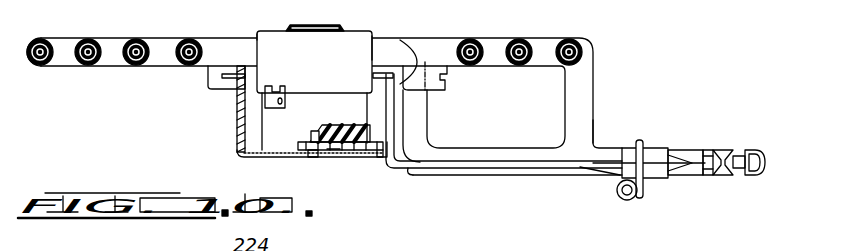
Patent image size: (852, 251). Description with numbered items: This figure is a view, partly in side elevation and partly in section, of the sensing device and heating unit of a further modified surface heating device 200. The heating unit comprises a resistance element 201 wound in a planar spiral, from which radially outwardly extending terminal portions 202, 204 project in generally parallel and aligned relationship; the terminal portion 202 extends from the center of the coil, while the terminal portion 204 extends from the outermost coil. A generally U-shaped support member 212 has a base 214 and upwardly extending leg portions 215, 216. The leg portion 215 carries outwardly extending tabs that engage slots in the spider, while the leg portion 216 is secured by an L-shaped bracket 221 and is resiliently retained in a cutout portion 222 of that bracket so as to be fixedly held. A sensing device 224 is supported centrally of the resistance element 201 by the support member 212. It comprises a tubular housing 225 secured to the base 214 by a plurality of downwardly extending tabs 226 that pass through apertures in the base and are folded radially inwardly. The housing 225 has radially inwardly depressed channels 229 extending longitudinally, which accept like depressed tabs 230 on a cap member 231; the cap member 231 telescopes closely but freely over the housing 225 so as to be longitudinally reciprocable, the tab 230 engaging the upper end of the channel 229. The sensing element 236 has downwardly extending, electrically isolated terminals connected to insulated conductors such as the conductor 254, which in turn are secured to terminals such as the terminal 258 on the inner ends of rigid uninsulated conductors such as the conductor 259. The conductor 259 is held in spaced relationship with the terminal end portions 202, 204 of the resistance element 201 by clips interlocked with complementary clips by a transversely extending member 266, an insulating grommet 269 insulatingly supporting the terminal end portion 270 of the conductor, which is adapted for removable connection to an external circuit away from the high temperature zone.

The surface heating device 200 is at (612, 38).
The resistance element 201 is at (523, 37).
The terminal portion 202 is at (565, 178).
The terminal portion 204 is at (597, 140).
The U-shaped support member 212 is at (236, 127).
The base 214 is at (290, 156).
The leg portion 215 is at (238, 103).
The leg portion 216 is at (423, 130).
The L-shaped bracket 221 is at (445, 80).
The cutout portion 222 is at (420, 64).
The sensing device 224 is at (370, 26).
The tubular housing 225 is at (373, 108).
The tabs 226 is at (272, 155).
The channel 229 is at (283, 104).
The tab 230 is at (278, 89).
The cap member 231 is at (273, 30).
The sensing element 236 is at (310, 27).
The insulated conductor 254 is at (312, 137).
The terminal 258 is at (327, 149).
The uninsulated conductor 259 is at (537, 167).
The member 266 is at (637, 200).
The insulating grommet 269 is at (657, 148).
The terminal end portion 270 is at (680, 178).